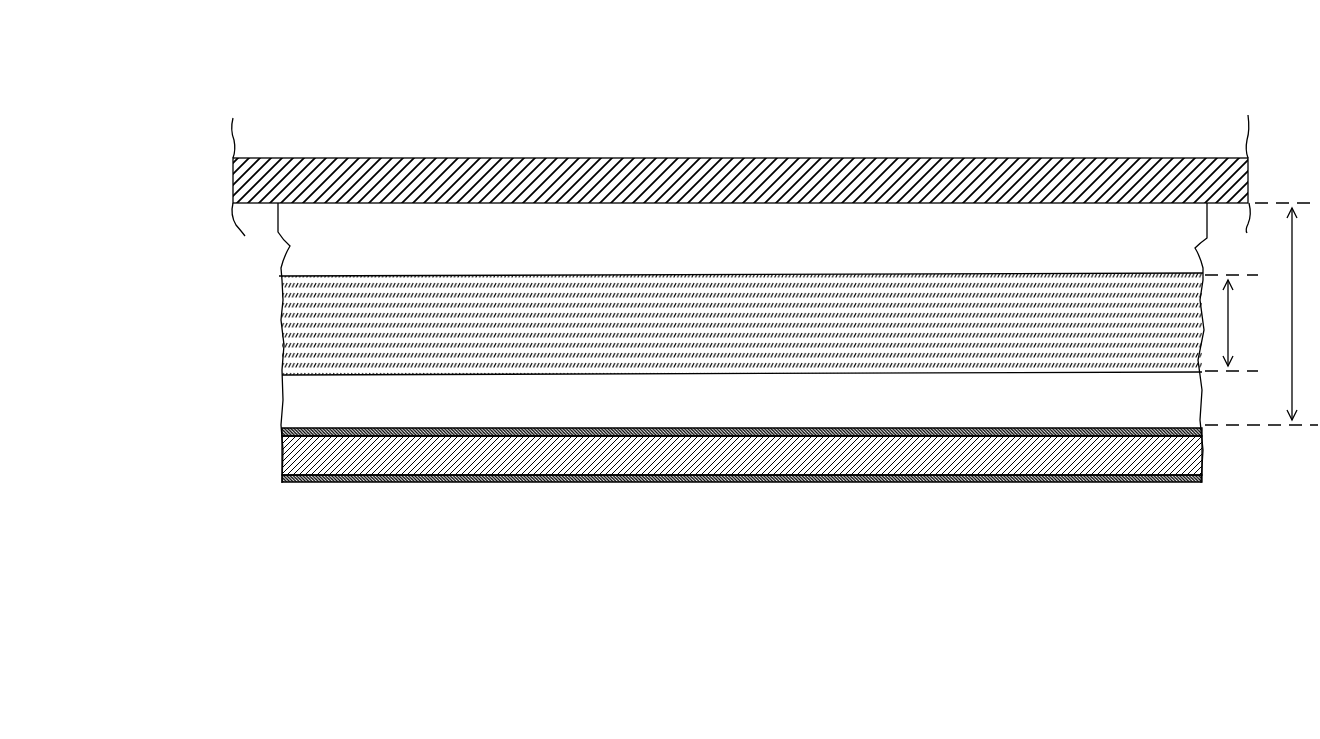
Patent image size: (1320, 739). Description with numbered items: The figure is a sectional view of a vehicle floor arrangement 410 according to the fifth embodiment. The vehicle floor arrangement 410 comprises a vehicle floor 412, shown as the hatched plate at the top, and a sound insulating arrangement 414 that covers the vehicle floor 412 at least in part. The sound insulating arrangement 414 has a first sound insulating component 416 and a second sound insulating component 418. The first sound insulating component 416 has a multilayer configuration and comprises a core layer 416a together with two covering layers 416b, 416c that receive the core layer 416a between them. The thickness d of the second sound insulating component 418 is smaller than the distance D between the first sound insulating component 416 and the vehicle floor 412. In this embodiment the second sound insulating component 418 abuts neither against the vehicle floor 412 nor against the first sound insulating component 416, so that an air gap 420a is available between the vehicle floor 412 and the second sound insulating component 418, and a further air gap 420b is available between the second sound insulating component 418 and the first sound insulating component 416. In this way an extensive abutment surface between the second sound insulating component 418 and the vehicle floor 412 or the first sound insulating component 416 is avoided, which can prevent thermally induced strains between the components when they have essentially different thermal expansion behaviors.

The vehicle floor arrangement 410 is at (1205, 36).
The vehicle floor 412 is at (1108, 157).
The sound insulating arrangement 414 is at (651, 343).
The first sound insulating component 416 is at (720, 483).
The core layer 416a is at (305, 456).
The covering layer 416b is at (283, 483).
The covering layer 416c is at (285, 428).
The second sound insulating component 418 is at (300, 320).
The air gap 420a is at (310, 258).
The air gap 420b is at (303, 395).